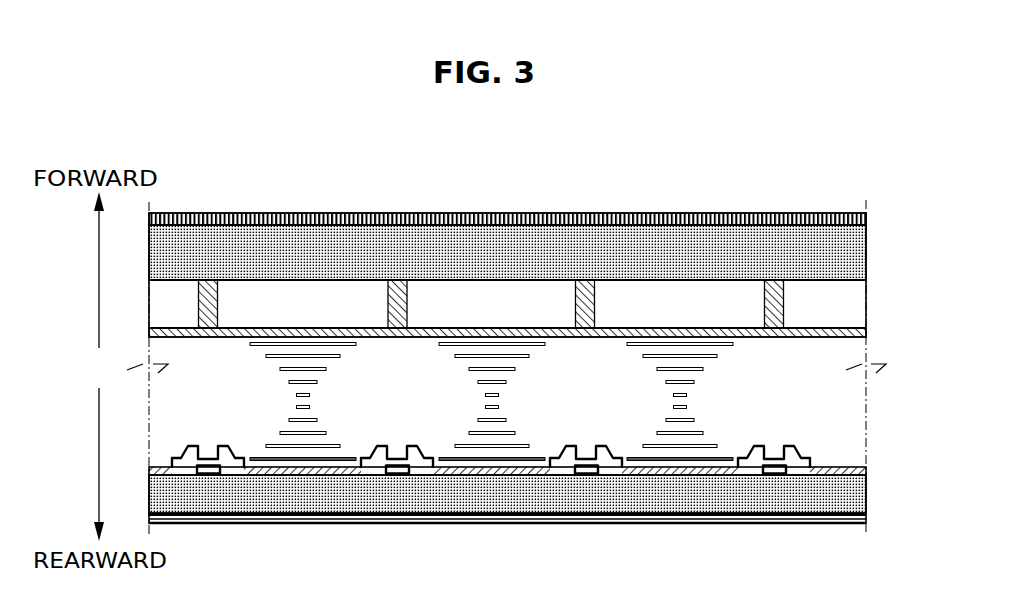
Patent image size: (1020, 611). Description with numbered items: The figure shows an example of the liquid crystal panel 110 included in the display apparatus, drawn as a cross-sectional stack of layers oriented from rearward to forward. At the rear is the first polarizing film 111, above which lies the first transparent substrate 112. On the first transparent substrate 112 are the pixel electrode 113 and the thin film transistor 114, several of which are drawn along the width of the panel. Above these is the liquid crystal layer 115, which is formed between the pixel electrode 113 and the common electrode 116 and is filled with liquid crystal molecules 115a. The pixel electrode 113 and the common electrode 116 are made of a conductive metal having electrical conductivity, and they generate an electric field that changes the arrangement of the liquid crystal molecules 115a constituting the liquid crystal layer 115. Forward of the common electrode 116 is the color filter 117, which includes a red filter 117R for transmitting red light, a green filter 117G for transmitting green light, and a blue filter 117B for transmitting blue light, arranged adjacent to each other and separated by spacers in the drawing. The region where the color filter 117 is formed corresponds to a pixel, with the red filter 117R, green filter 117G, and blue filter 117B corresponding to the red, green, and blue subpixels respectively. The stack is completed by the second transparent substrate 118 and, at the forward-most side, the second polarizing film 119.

The liquid crystal panel 110 is at (797, 177).
The first polarizing film 111 is at (867, 525).
The first transparent substrate 112 is at (867, 497).
The pixel electrode 113 is at (867, 472).
The thin film transistor 114 is at (787, 453).
The liquid crystal layer 115 is at (860, 408).
The liquid crystal molecules 115a is at (488, 462).
The common electrode 116 is at (868, 331).
The color filter 117 is at (860, 300).
The red filter 117R is at (346, 295).
The green filter 117G is at (543, 293).
The blue filter 117B is at (723, 293).
The second transparent substrate 118 is at (868, 253).
The second polarizing film 119 is at (868, 218).